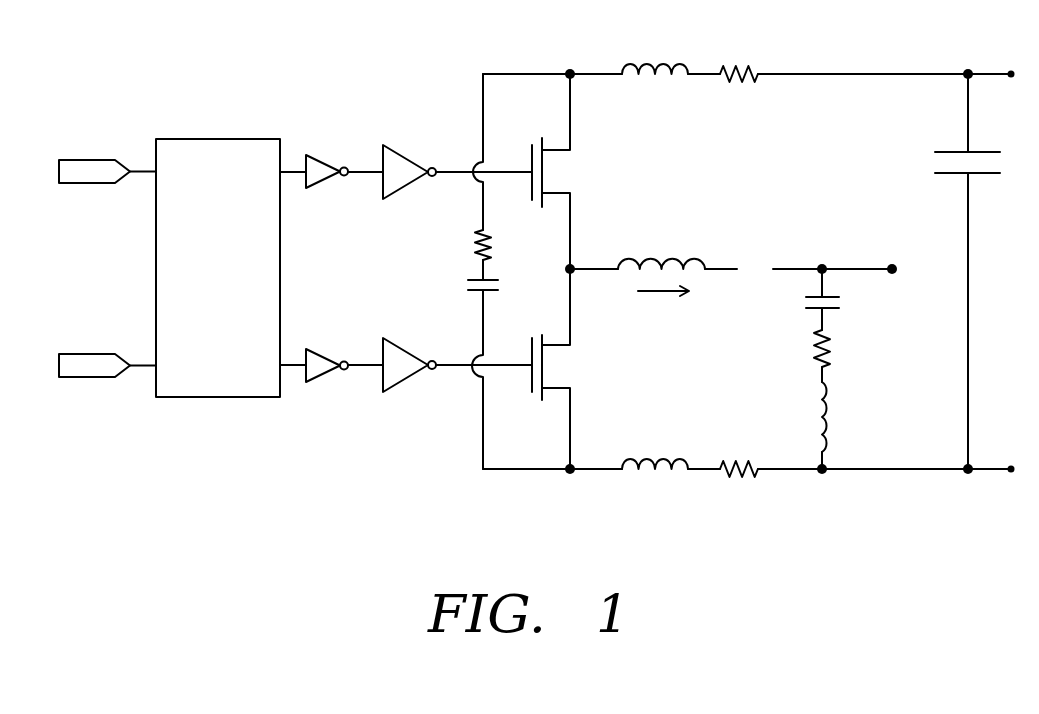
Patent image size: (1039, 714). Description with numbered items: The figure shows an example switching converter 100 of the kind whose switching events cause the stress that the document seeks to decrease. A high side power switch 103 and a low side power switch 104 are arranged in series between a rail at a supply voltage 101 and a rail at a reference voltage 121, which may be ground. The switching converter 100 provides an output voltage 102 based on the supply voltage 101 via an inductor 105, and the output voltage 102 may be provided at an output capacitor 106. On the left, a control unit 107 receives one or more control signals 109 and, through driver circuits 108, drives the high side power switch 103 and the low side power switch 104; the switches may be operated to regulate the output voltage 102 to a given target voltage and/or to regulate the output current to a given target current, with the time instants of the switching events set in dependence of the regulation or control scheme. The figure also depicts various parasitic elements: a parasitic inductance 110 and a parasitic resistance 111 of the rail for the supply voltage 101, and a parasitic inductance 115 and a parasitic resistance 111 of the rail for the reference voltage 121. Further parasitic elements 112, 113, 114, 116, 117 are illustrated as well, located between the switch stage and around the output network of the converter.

The switching converter 100 is at (208, 40).
The supply voltage 101 is at (570, 68).
The output voltage 102 is at (892, 264).
The high side power switch 103 is at (556, 172).
The low side power switch 104 is at (556, 365).
The inductor 105 is at (662, 290).
The output capacitor 106 is at (845, 302).
The control unit 107 is at (210, 139).
The driver circuit 108 is at (371, 133).
The control signal 109 is at (88, 158).
The parasitic inductance 110 is at (660, 81).
The parasitic resistance 111 is at (738, 86).
The parasitic element 112 is at (465, 253).
The parasitic element 113 is at (493, 296).
The parasitic element 114 is at (928, 163).
The parasitic inductance 115 is at (660, 478).
The parasitic element 116 is at (838, 352).
The parasitic element 117 is at (838, 423).
The reference voltage 121 is at (566, 476).